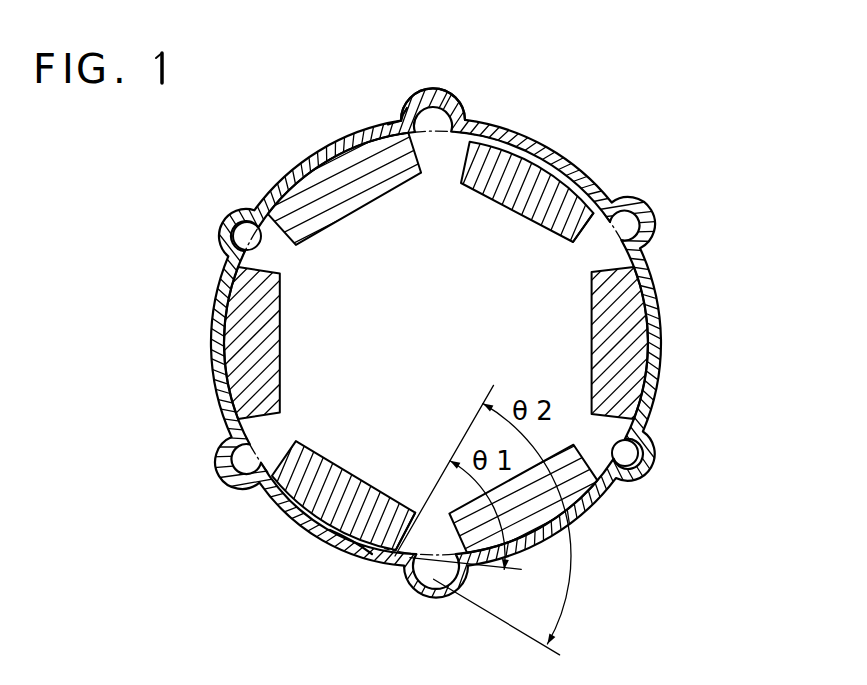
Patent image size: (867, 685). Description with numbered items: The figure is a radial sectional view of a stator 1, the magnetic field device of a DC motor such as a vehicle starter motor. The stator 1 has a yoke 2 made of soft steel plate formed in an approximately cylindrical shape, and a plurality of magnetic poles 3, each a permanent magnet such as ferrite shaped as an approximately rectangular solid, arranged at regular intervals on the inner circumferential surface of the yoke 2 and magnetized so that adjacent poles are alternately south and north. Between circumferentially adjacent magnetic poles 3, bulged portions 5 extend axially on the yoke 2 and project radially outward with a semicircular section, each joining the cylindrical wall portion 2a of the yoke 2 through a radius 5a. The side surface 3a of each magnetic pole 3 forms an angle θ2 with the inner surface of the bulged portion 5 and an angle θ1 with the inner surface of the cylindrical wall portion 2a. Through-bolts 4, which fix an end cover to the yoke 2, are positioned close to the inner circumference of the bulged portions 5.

The stator 1 is at (433, 344).
The yoke 2 is at (319, 139).
The cylindrical wall portion 2a is at (351, 552).
The magnetic pole 3 is at (495, 150).
The side surface 3a is at (590, 233).
The through-bolt 4 is at (245, 230).
The bulged portion 5 is at (437, 85).
The radius 5a is at (393, 118).